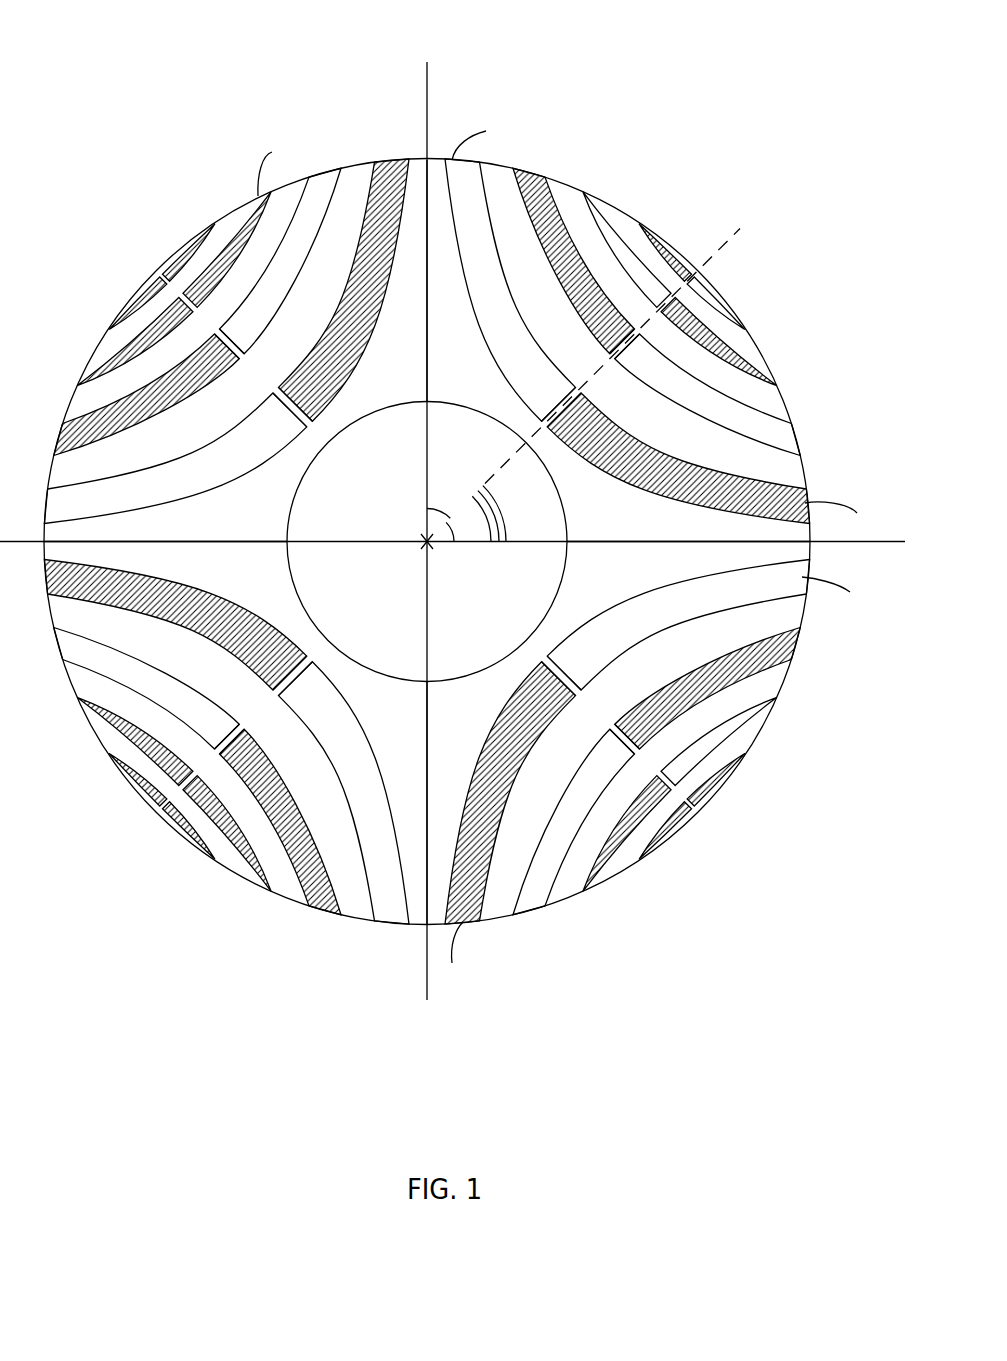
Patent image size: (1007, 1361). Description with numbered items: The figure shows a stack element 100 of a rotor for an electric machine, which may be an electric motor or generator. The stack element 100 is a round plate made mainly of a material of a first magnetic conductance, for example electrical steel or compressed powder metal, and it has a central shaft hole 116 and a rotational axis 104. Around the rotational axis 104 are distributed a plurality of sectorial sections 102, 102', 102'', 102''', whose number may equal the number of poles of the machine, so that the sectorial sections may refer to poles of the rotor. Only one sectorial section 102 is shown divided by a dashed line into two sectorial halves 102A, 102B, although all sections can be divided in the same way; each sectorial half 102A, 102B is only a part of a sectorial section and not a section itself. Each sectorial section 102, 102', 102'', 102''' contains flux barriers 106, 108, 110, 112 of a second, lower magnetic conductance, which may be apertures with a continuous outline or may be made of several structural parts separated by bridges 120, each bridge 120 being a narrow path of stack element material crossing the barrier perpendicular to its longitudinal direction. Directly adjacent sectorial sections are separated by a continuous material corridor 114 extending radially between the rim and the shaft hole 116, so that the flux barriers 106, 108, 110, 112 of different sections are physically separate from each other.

The stack element 100 is at (158, 180).
The sectorial section 102 is at (452, 531).
The sectorial half 102A is at (596, 296).
The sectorial half 102B is at (846, 446).
The sectorial section 102' is at (836, 645).
The sectorial section 102'' is at (366, 953).
The sectorial section 102''' is at (184, 236).
The rotational axis 104 is at (428, 545).
The flux barrier 106 is at (505, 325).
The flux barrier 108 is at (560, 287).
The flux barrier 110 is at (613, 252).
The flux barrier 112 is at (700, 268).
The continuous material corridor 114 is at (466, 364).
The shaft hole 116 is at (376, 525).
The bridge 120 is at (278, 388).